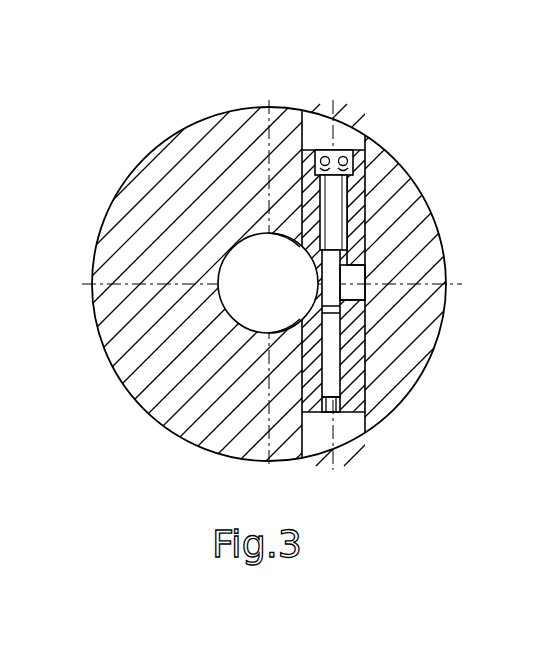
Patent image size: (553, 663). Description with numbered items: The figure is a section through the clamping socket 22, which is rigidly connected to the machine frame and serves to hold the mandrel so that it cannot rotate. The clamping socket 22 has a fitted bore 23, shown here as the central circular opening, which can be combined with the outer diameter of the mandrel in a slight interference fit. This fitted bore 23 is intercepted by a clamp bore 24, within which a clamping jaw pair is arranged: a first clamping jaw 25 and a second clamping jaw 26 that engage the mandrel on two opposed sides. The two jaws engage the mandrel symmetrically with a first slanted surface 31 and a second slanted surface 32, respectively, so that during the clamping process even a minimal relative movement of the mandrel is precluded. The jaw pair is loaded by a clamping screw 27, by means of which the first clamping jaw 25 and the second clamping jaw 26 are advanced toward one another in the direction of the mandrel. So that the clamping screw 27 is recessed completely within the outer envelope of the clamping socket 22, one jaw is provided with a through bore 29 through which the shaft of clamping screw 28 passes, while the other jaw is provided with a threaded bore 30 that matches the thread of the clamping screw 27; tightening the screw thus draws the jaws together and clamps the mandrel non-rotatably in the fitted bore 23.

The clamping socket 22 is at (155, 178).
The fitted bore 23 is at (262, 297).
The clamp bore 24 is at (347, 138).
The first clamping jaw 25 is at (353, 352).
The second clamping jaw 26 is at (360, 230).
The clamping screw 27 is at (323, 152).
The shaft of clamping screw 28 is at (338, 193).
The through bore 29 is at (366, 263).
The threaded bore 30 is at (363, 398).
The first slanted surface 31 is at (300, 245).
The second slanted surface 32 is at (300, 320).